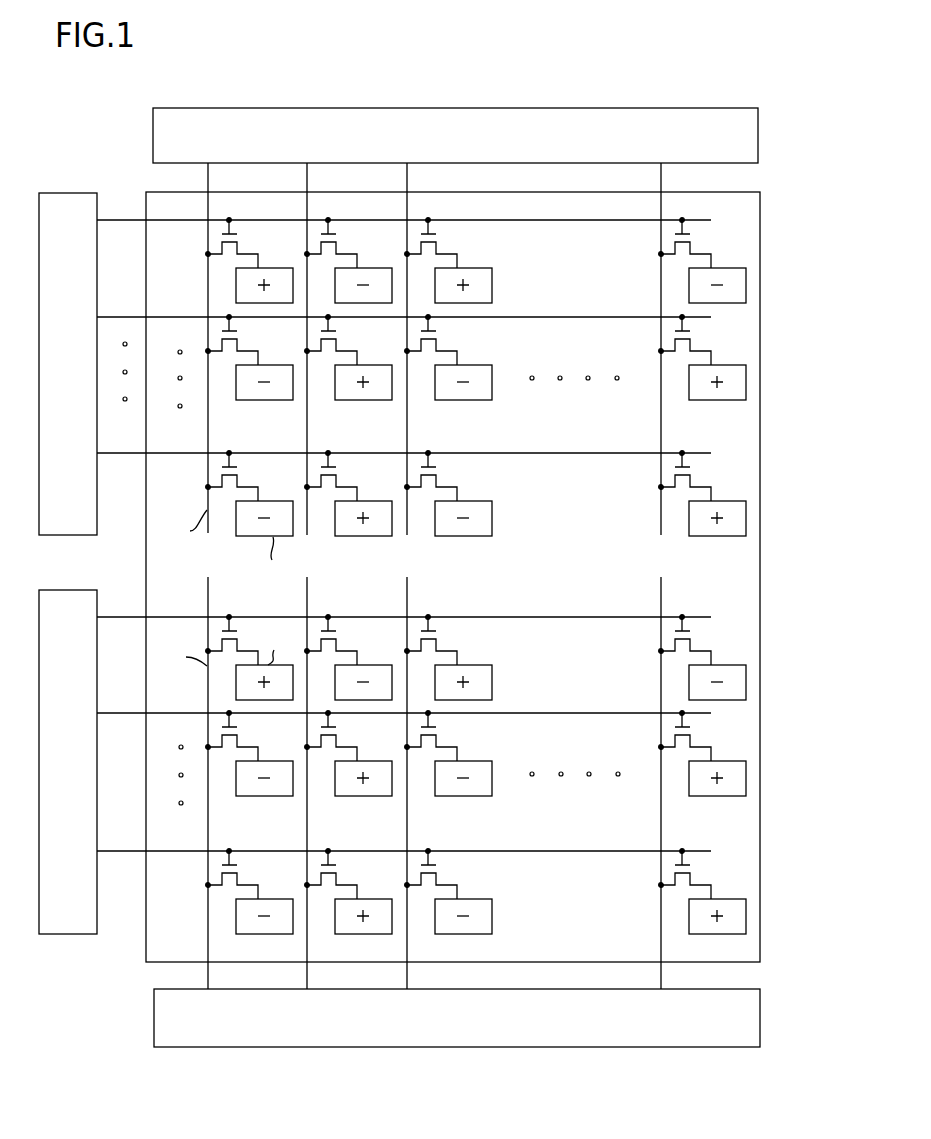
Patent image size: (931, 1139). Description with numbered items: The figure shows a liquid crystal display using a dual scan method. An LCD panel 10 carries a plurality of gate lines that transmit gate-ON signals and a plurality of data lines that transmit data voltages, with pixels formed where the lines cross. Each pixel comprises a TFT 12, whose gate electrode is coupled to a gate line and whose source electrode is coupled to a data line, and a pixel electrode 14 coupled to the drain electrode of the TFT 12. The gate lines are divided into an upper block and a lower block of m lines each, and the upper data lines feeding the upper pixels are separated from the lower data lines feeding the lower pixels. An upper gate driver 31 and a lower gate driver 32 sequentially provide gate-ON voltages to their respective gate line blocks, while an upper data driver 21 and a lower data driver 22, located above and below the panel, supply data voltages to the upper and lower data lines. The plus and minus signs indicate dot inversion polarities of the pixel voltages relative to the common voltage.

The liquid crystal display panel 10 is at (760, 215).
The TFT 12 is at (237, 247).
The pixel electrode 14 is at (283, 268).
The upper data driver 21 is at (153, 140).
The lower data driver 22 is at (154, 1015).
The upper gate driver 31 is at (68, 193).
The lower gate driver 32 is at (68, 934).